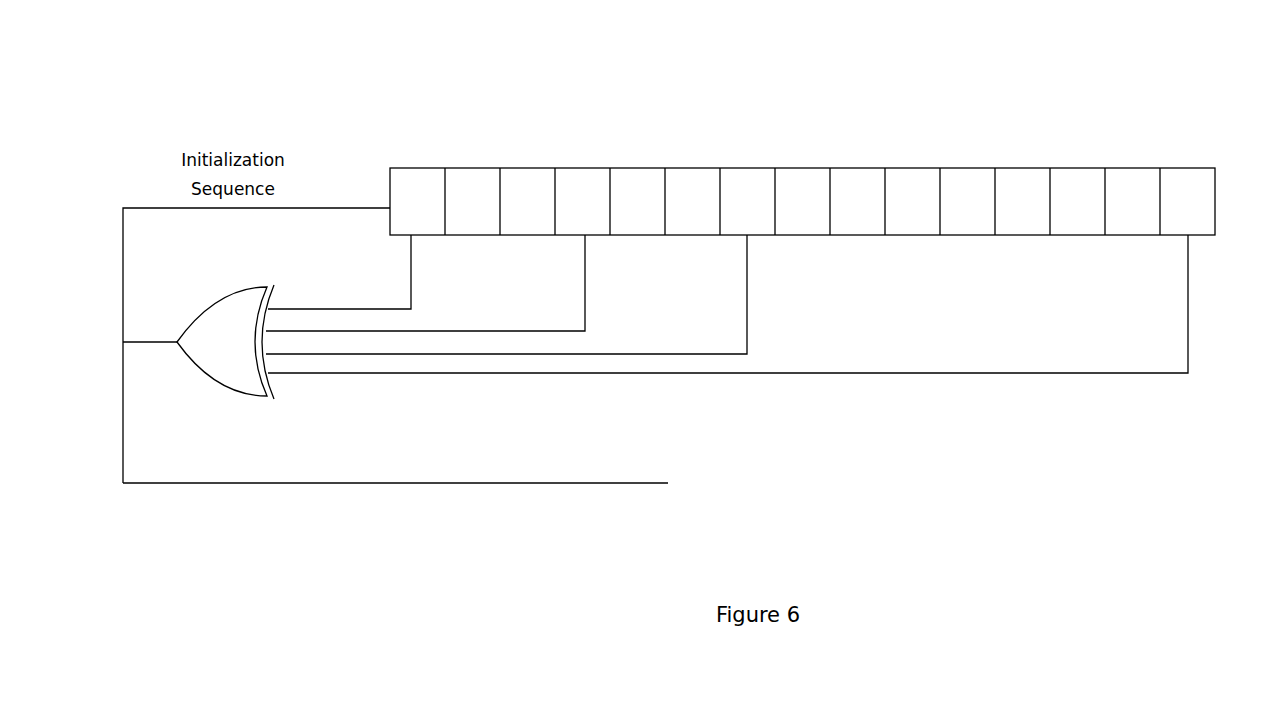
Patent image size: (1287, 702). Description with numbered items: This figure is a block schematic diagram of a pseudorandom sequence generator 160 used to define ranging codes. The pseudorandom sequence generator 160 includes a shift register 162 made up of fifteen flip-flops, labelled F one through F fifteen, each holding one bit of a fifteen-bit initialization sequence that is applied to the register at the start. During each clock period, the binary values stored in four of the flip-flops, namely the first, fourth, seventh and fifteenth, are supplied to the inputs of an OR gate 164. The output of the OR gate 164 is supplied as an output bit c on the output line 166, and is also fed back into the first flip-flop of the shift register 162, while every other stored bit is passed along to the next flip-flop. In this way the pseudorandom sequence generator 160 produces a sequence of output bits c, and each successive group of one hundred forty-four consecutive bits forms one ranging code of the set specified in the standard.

The pseudorandom sequence generator 160 is at (812, 58).
The shift register 162 is at (1215, 197).
The OR gate 164 is at (215, 294).
The output line 166 is at (548, 483).